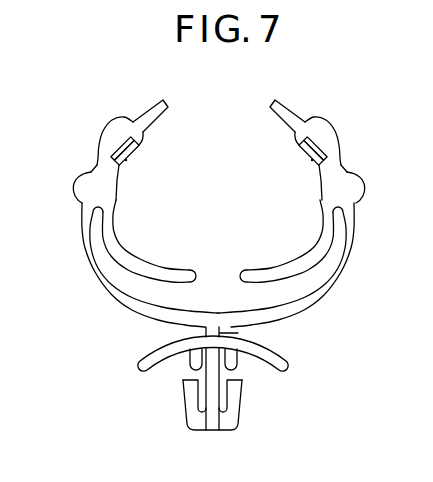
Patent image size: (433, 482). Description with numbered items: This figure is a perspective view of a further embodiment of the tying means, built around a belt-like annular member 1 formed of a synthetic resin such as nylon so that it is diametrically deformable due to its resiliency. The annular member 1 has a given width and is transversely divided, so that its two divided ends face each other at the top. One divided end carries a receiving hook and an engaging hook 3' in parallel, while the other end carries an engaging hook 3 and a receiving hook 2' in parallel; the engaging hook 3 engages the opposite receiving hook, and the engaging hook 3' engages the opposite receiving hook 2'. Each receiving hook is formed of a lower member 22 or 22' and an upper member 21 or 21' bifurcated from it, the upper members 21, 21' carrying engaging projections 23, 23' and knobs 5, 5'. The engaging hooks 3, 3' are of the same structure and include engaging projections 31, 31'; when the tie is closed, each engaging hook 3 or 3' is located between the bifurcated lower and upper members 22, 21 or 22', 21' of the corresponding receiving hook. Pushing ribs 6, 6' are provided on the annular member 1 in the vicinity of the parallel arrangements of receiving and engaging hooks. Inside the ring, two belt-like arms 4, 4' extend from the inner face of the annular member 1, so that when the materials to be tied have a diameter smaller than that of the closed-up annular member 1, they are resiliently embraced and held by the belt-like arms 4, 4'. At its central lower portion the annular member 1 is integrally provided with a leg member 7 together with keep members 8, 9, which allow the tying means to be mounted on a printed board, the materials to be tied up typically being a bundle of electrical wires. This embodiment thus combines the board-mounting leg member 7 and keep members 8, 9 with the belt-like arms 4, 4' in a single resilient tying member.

The annular member 1 is at (128, 297).
The receiving hook 2' is at (215, 99).
The engaging hook 3 is at (291, 183).
The engaging hook 3' is at (152, 182).
The belt-like arm 4 is at (119, 241).
The belt-like arm 4' is at (318, 242).
The knob 5 is at (149, 94).
The knob 5' is at (289, 94).
The pushing rib 6 is at (54, 184).
The pushing rib 6' is at (380, 193).
The leg member 7 is at (238, 333).
The keep member 8 is at (152, 355).
The keep member 9 is at (188, 402).
The upper member 21 is at (87, 134).
The upper member 21' is at (349, 134).
The lower member 22 is at (126, 196).
The lower member 22' is at (312, 198).
The engaging projection 23 is at (151, 148).
The engaging projection 23' is at (277, 149).
The engaging projection 31 is at (286, 163).
The engaging projection 31' is at (155, 162).